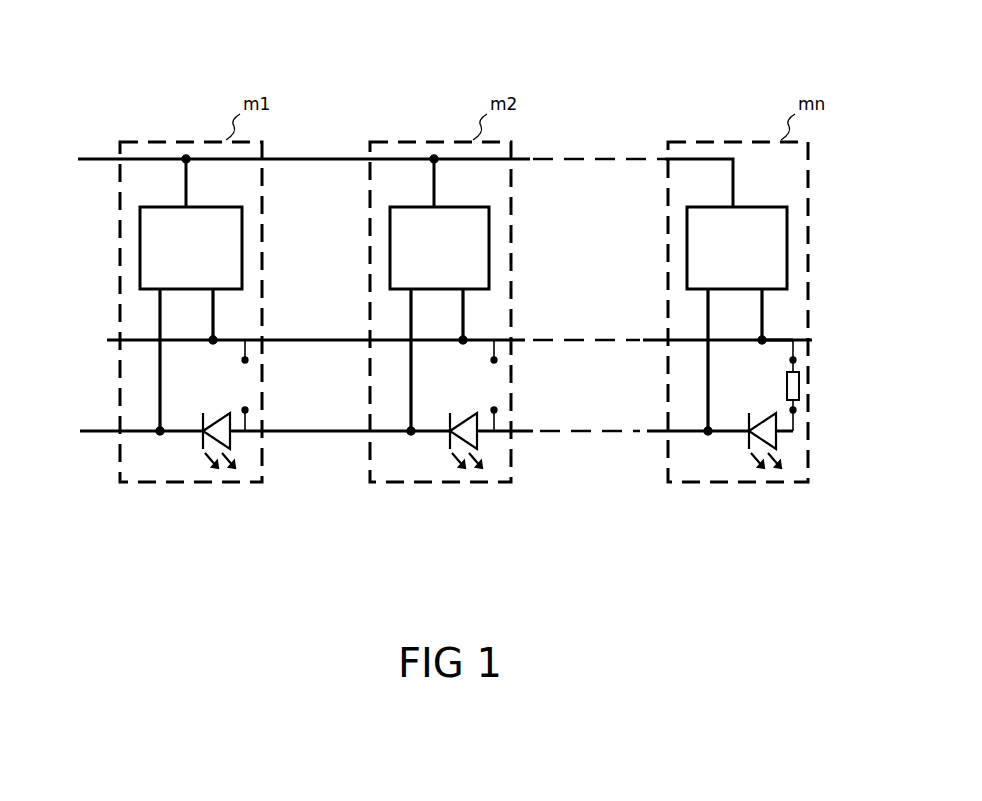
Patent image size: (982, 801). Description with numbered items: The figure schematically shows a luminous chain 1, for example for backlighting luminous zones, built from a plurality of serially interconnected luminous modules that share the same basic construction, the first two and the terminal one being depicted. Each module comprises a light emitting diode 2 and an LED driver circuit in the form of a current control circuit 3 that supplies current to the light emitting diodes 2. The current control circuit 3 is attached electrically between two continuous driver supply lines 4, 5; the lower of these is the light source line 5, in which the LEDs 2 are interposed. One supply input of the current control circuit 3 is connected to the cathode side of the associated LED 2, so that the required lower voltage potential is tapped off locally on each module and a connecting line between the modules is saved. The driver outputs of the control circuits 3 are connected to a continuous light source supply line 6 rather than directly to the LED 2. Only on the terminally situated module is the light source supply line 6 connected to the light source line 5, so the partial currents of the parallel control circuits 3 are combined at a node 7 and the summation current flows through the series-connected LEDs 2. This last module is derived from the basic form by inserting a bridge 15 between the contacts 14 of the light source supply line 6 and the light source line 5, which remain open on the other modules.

The luminous chain 1 is at (183, 61).
The light emitting diode 2 is at (218, 411).
The current control circuit 3 is at (744, 264).
The driver supply line 4 is at (94, 165).
The light source line 5 is at (93, 430).
The light source supply line 6 is at (204, 339).
The node 7 is at (758, 345).
The contacts 14 is at (240, 353).
The bridge 15 is at (800, 388).